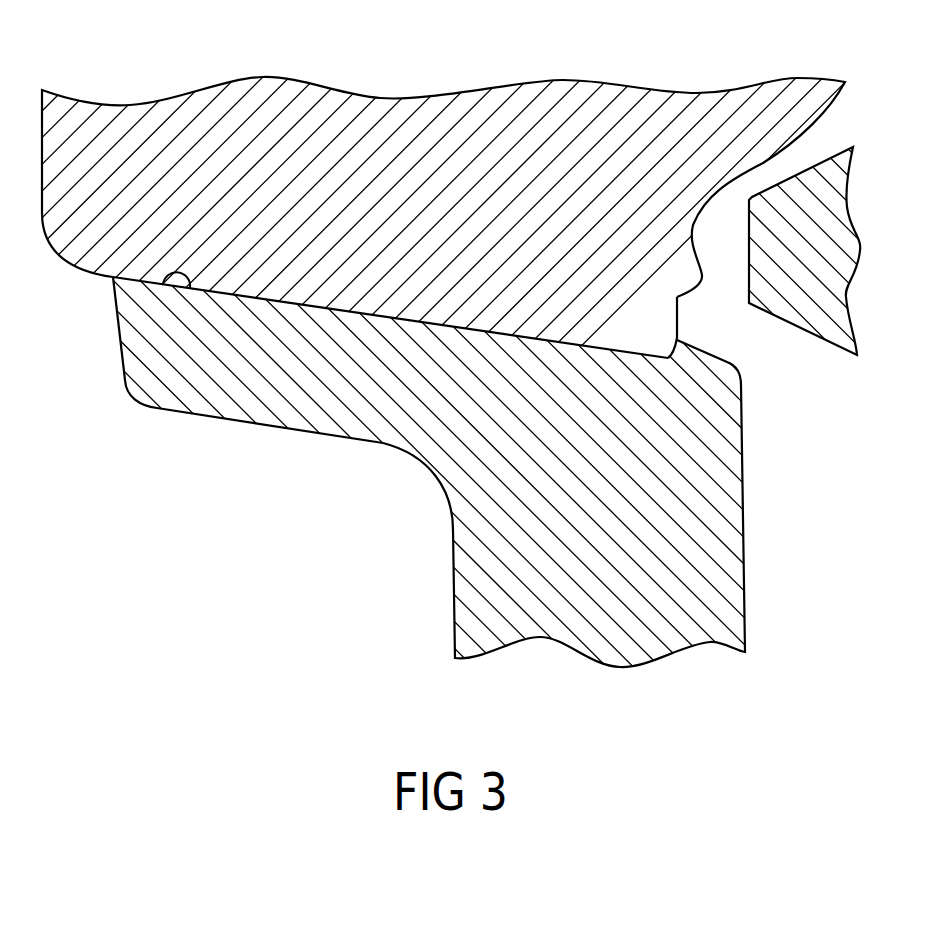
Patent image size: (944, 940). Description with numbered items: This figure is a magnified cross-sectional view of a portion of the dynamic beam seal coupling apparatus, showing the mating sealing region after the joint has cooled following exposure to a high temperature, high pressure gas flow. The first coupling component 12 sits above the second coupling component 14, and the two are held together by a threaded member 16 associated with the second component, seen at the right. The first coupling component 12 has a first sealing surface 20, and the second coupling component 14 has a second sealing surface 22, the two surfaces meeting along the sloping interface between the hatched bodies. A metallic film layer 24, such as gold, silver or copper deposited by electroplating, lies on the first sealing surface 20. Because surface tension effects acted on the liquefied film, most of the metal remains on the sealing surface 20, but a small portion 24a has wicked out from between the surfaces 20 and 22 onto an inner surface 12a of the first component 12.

The first coupling component 12 is at (173, 110).
The inner surface of component 12 12a is at (678, 298).
The second coupling component 14 is at (720, 547).
The threaded member 16 is at (826, 327).
The first sealing surface 20 is at (247, 297).
The second sealing surface 22 is at (160, 281).
The metallic film layer 24 is at (433, 323).
The small portion of the metallic film layer 24a is at (722, 362).